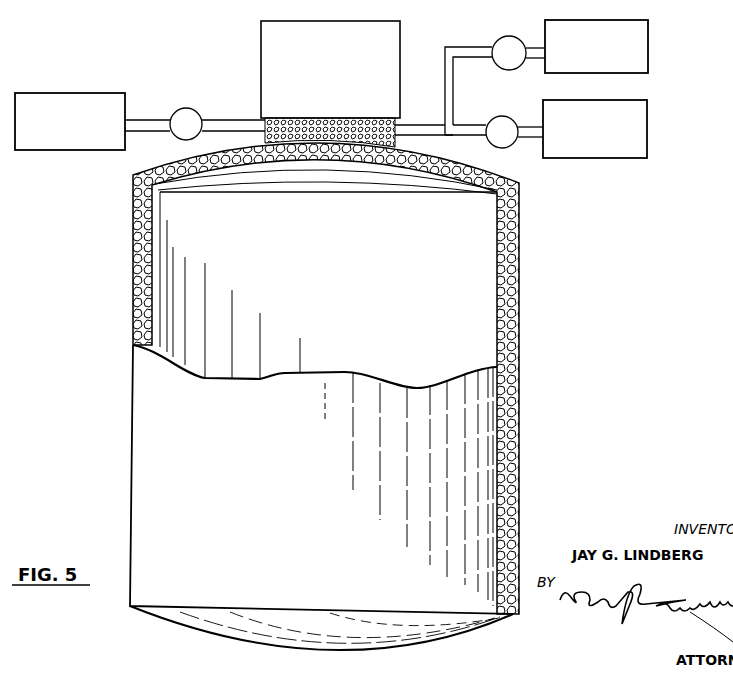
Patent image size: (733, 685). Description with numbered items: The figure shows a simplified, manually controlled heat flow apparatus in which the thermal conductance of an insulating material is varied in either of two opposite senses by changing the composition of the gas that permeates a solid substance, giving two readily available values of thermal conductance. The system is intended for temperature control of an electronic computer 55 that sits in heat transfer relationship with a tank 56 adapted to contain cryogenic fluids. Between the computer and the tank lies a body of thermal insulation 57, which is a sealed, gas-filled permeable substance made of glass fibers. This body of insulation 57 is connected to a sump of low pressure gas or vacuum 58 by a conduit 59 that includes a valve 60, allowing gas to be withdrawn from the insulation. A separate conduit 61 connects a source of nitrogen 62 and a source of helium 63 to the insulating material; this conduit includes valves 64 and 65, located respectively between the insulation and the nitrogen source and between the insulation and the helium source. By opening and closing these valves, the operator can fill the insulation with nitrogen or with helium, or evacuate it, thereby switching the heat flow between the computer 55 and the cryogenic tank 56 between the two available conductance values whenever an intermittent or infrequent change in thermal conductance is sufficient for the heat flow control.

The electronic computer 55 is at (348, 82).
The tank 56 is at (340, 288).
The body of thermal insulation 57 is at (265, 125).
The sump of low pressure gas or vacuum 58 is at (98, 135).
The conduit 59 is at (143, 120).
The valve 60 is at (184, 116).
The conduit 61 is at (450, 88).
The source of nitrogen 62 is at (643, 46).
The source of helium 63 is at (634, 128).
The valve 64 is at (505, 46).
The valve 65 is at (502, 117).